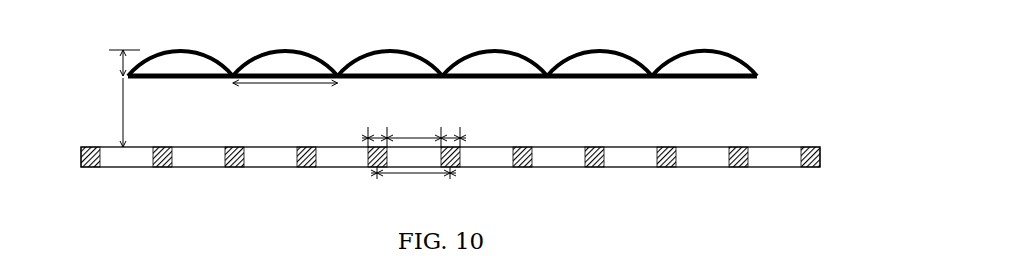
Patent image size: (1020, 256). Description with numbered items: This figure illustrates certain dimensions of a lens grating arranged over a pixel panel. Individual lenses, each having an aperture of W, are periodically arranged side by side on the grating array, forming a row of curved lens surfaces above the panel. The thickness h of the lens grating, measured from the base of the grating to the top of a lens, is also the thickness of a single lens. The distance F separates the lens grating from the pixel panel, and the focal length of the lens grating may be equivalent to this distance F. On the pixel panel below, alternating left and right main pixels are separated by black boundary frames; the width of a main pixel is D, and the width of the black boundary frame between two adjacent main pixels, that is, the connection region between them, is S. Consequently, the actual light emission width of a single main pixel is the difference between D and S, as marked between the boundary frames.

The thickness of the lens grating h is at (123, 63).
The distance of the slit gratings F is at (115, 112).
The aperture of a lens W is at (285, 93).
The width of the black boundary frame S is at (414, 135).
The width of a main pixel D is at (413, 179).